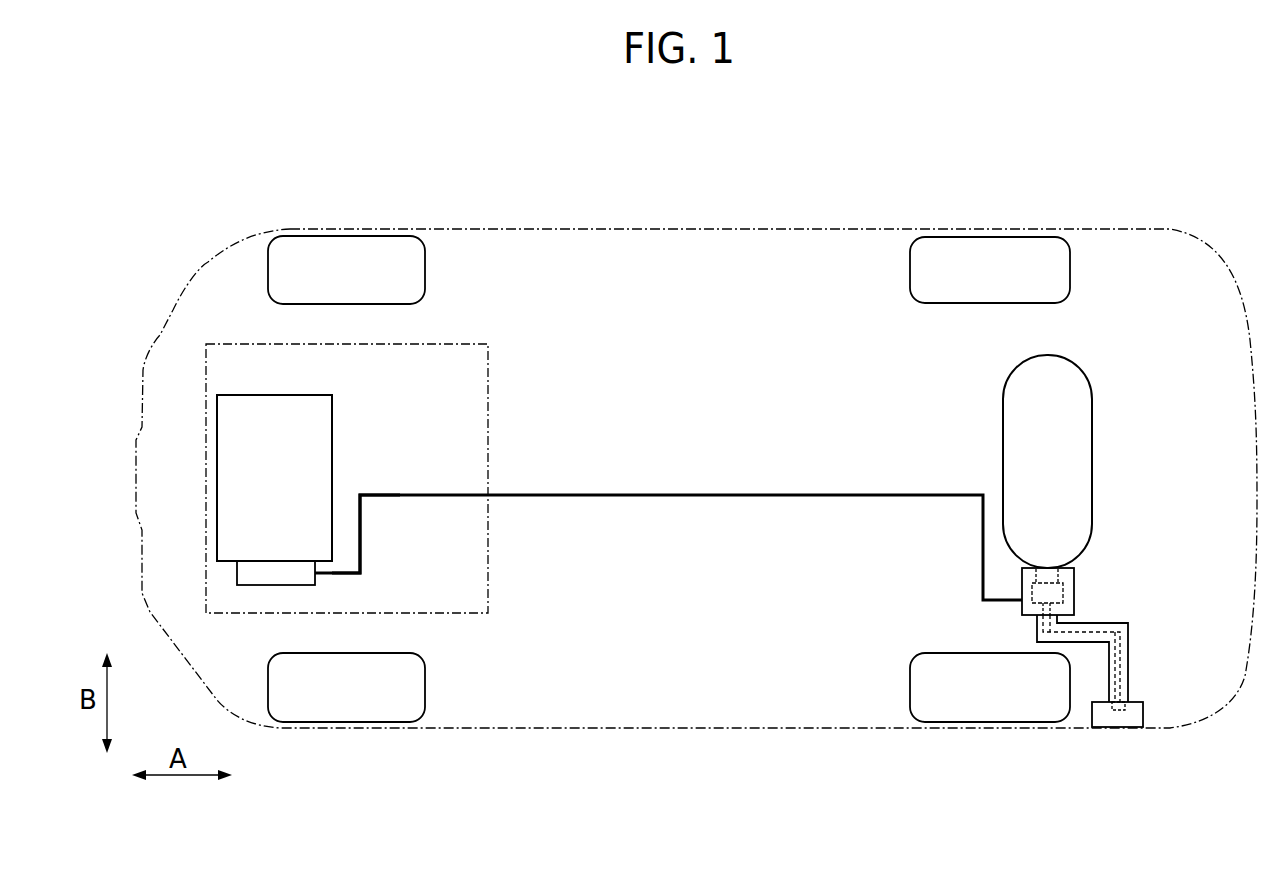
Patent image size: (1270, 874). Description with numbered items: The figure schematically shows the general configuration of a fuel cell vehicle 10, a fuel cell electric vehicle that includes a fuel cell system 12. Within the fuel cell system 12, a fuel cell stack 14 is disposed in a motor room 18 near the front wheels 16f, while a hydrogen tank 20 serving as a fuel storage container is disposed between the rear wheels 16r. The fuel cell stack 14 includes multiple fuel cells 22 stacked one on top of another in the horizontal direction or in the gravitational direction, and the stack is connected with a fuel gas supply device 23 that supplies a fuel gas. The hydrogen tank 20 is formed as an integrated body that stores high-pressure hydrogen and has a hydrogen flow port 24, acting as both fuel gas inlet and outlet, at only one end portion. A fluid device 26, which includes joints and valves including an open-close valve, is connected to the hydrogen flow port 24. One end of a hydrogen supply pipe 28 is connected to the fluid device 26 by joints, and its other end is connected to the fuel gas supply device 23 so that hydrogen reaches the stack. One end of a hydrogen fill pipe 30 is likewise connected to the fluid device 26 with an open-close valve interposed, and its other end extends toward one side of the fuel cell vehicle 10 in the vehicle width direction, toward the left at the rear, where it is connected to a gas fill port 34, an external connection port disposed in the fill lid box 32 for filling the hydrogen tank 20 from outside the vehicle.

The fuel cell vehicle 10 is at (694, 137).
The fuel cell system 12 is at (186, 354).
The fuel cell stack 14 is at (342, 520).
The front wheels 16f is at (358, 247).
The rear wheels 16r is at (972, 247).
The motor room 18 is at (491, 383).
The hydrogen tank 20 is at (1083, 404).
The fuel cell 22 is at (321, 440).
The fuel gas supply device 23 is at (260, 586).
The hydrogen flow port 24 is at (1047, 575).
The fluid device 26 is at (1077, 593).
The hydrogen supply pipe 28 is at (620, 498).
The hydrogen fill pipe 30 is at (1117, 662).
The fill lid box 32 is at (1152, 713).
The gas fill port 34 is at (1118, 712).